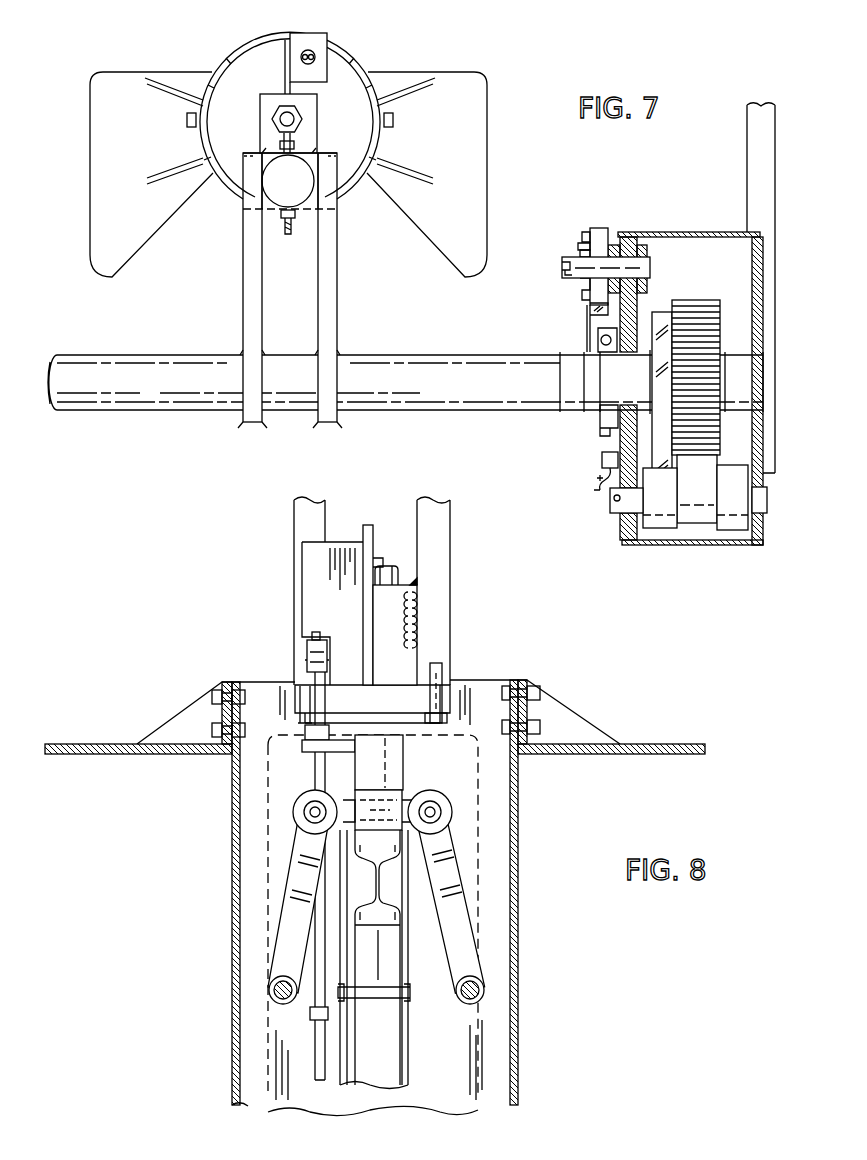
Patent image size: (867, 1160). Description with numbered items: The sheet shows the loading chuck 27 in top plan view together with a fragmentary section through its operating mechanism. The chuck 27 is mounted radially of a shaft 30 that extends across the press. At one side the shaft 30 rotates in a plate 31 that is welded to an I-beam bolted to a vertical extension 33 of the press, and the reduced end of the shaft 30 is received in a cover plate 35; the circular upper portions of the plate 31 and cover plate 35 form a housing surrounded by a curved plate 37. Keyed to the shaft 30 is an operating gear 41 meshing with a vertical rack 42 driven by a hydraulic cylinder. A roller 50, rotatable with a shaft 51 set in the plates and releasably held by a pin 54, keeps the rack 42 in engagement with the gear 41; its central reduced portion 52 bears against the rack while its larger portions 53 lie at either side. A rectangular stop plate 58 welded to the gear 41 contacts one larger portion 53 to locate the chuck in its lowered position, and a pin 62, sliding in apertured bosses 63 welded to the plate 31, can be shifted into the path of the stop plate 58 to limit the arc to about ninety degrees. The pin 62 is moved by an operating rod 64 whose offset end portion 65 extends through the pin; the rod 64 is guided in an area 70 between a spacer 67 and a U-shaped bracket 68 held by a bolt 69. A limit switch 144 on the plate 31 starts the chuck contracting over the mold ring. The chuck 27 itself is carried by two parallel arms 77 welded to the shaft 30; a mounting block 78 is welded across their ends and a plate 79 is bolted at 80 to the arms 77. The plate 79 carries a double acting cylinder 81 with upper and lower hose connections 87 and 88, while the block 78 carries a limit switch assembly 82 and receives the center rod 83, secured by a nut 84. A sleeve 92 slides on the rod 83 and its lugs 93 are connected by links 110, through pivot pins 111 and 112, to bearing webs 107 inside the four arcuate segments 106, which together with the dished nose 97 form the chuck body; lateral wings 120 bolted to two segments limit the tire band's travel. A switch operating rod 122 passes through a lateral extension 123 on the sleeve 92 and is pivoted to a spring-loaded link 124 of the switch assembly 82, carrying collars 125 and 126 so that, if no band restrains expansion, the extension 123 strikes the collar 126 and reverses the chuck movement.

In FIG. 7, the loading mechanism or chuck 27 is at (200, 58).
In FIG. 8, the loading mechanism or chuck 27 is at (532, 940).
In FIG. 7, the shaft 30 is at (396, 357).
In FIG. 7, the plate 31 is at (621, 531).
In FIG. 7, the vertical extension 33 is at (747, 164).
In FIG. 7, the cover plate 35 is at (760, 545).
In FIG. 7, the curved plate 37 is at (690, 231).
In FIG. 7, the operating gear 41 is at (701, 300).
In FIG. 7, the vertical rack 42 is at (696, 478).
In FIG. 7, the roller 50 is at (743, 530).
In FIG. 7, the shaft 51 is at (767, 496).
In FIG. 7, the central reduced portion 52 is at (690, 525).
In FIG. 7, the larger portions 53 is at (652, 522).
In FIG. 7, the pin 54 is at (612, 500).
In FIG. 7, the rectangular stop plate 58 is at (662, 312).
In FIG. 7, the pin 62 is at (562, 268).
In FIG. 7, the apertured bosses 63 is at (642, 246).
In FIG. 7, the operating rod 64 is at (587, 317).
In FIG. 7, the offset end portion 65 is at (566, 272).
In FIG. 7, the spacer 67 is at (603, 228).
In FIG. 7, the U-shaped bracket 68 is at (578, 245).
In FIG. 7, the bolt 69 is at (584, 231).
In FIG. 7, the area 70 is at (580, 253).
In FIG. 7, the arms 77 is at (322, 293).
In FIG. 8, the arms 77 is at (294, 528).
In FIG. 7, the mounting block 78 is at (262, 136).
In FIG. 8, the mounting block 78 is at (410, 615).
In FIG. 7, the plate 79 is at (318, 202).
In FIG. 8, the plate 79 is at (448, 706).
In FIG. 8, the bolts 80 is at (300, 718).
In FIG. 7, the double acting cylinder 81 is at (278, 187).
In FIG. 7, the limit switch assembly 82 is at (318, 43).
In FIG. 8, the limit switch assembly 82 is at (310, 620).
In FIG. 7, the center rod 83 is at (282, 119).
In FIG. 8, the center rod 83 is at (377, 558).
In FIG. 7, the nut 84 is at (302, 119).
In FIG. 8, the nut 84 is at (393, 567).
In FIG. 7, the upper connection 87 is at (296, 146).
In FIG. 7, the lower connection 88 is at (286, 228).
In FIG. 8, the sleeve 92 is at (396, 765).
In FIG. 8, the lateral lugs or ears 93 is at (336, 800).
In FIG. 7, the chuck tip or nose 97 is at (237, 44).
In FIG. 7, the arcuate panels or segments 106 is at (204, 147).
In FIG. 8, the arcuate panels or segments 106 is at (234, 880).
In FIG. 8, the bearing webs 107 is at (248, 1037).
In FIG. 8, the link 110 is at (280, 947).
In FIG. 8, the pivot pin 111 is at (345, 816).
In FIG. 8, the pivot pin 112 is at (270, 990).
In FIG. 7, the lateral wings or ledges 120 is at (92, 224).
In FIG. 8, the lateral wings or ledges 120 is at (117, 744).
In FIG. 8, the switch operating rod 122 is at (315, 918).
In FIG. 8, the lateral extension 123 is at (307, 746).
In FIG. 8, the short link 124 is at (306, 653).
In FIG. 8, the collar 125 is at (328, 735).
In FIG. 8, the collar 126 is at (330, 1015).
In FIG. 7, the limit switch 144 is at (603, 458).